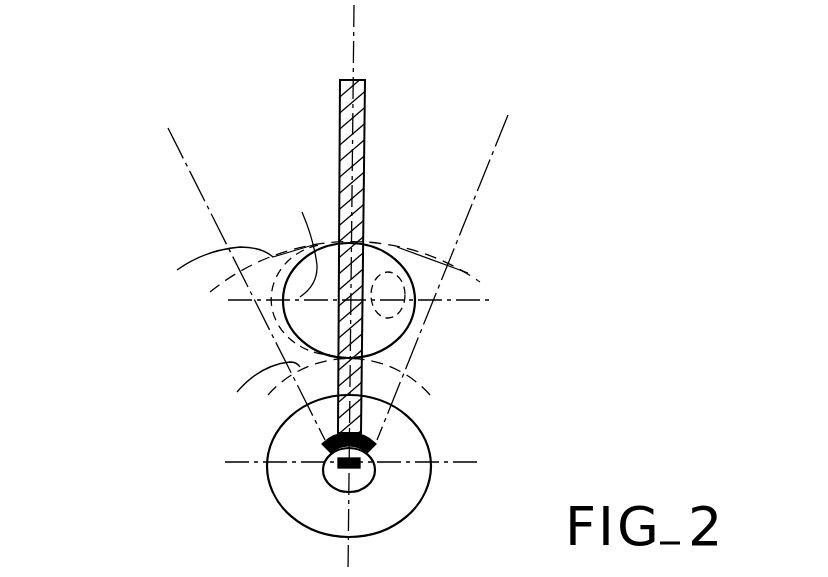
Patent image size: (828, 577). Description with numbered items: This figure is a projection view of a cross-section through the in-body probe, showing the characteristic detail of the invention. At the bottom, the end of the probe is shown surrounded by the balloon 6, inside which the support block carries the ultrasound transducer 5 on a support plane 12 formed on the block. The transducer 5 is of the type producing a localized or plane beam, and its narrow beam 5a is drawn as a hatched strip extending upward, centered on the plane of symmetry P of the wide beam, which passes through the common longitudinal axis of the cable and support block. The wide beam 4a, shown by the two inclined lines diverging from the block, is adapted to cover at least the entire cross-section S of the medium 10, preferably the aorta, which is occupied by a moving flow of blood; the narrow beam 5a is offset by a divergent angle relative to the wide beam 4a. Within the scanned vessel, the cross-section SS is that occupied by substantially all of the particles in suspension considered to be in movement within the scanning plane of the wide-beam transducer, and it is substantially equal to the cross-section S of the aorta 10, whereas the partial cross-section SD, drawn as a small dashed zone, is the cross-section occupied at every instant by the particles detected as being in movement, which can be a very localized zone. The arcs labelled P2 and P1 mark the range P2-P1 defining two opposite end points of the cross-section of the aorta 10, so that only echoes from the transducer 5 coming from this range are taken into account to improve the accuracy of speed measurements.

The plane of symmetry P is at (351, 48).
The narrow beam 5a is at (360, 128).
The wide beam 4a is at (190, 163).
The cross-section S is at (272, 333).
The cross-section occupied by particles in suspension SS is at (303, 237).
The partial cross-section SD is at (390, 287).
The end point of range P2-P1 P2 is at (225, 271).
The end point of range P2- P1 is at (254, 395).
The medium 10 is at (413, 280).
The balloon 6 is at (421, 428).
The support plane 12 is at (385, 449).
The ultrasound transducer 5 is at (353, 468).